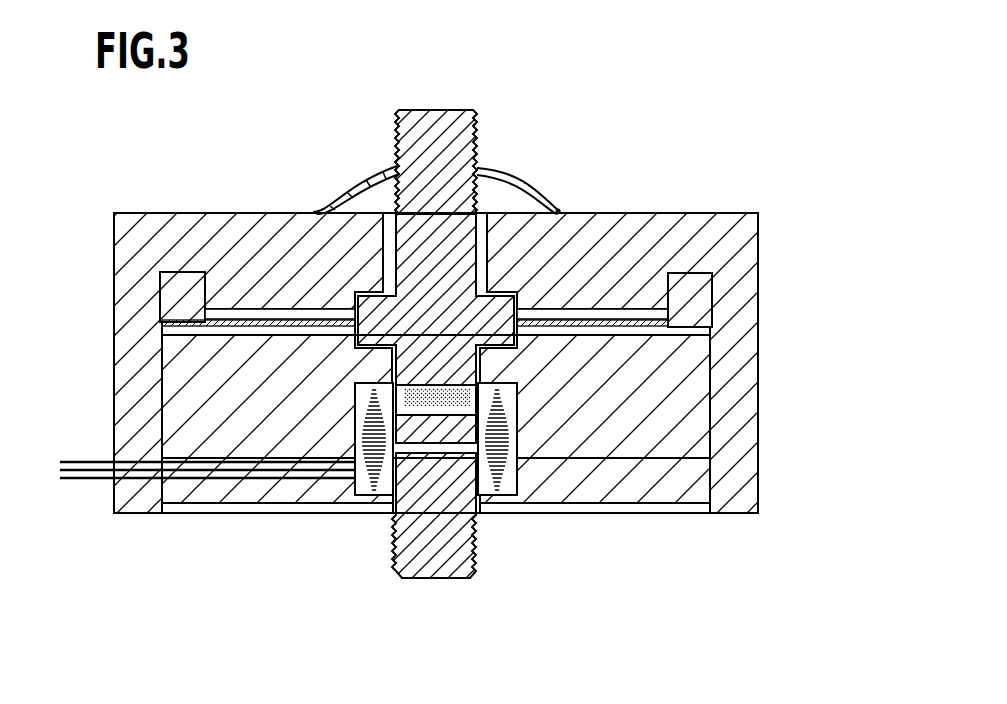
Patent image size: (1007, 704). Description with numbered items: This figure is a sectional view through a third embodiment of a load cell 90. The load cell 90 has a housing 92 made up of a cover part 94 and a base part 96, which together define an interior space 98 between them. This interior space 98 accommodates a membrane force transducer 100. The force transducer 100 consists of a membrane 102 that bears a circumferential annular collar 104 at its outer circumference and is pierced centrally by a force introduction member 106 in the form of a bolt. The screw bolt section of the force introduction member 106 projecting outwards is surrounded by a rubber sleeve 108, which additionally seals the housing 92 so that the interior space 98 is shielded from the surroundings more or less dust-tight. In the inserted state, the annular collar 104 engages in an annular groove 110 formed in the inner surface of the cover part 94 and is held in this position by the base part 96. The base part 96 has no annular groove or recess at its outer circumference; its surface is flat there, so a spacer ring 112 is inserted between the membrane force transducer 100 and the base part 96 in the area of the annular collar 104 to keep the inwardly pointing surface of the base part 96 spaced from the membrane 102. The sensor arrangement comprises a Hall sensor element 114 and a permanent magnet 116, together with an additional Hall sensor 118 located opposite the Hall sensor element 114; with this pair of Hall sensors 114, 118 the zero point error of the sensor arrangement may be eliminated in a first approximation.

The load cell 90 is at (436, 272).
The housing 92 is at (713, 540).
The cover part 94 is at (782, 362).
The base part 96 is at (240, 528).
The interior space 98 is at (598, 306).
The membrane force transducer 100 is at (128, 305).
The membrane 102 is at (248, 317).
The annular collar 104 is at (717, 303).
The force introduction member 106 is at (414, 93).
The rubber sleeve 108 is at (362, 173).
The annular groove 110 is at (692, 273).
The spacer ring 112 is at (187, 337).
The Hall sensor element 114 is at (375, 468).
The permanent magnet 116 is at (422, 398).
The additional Hall sensor 118 is at (505, 450).